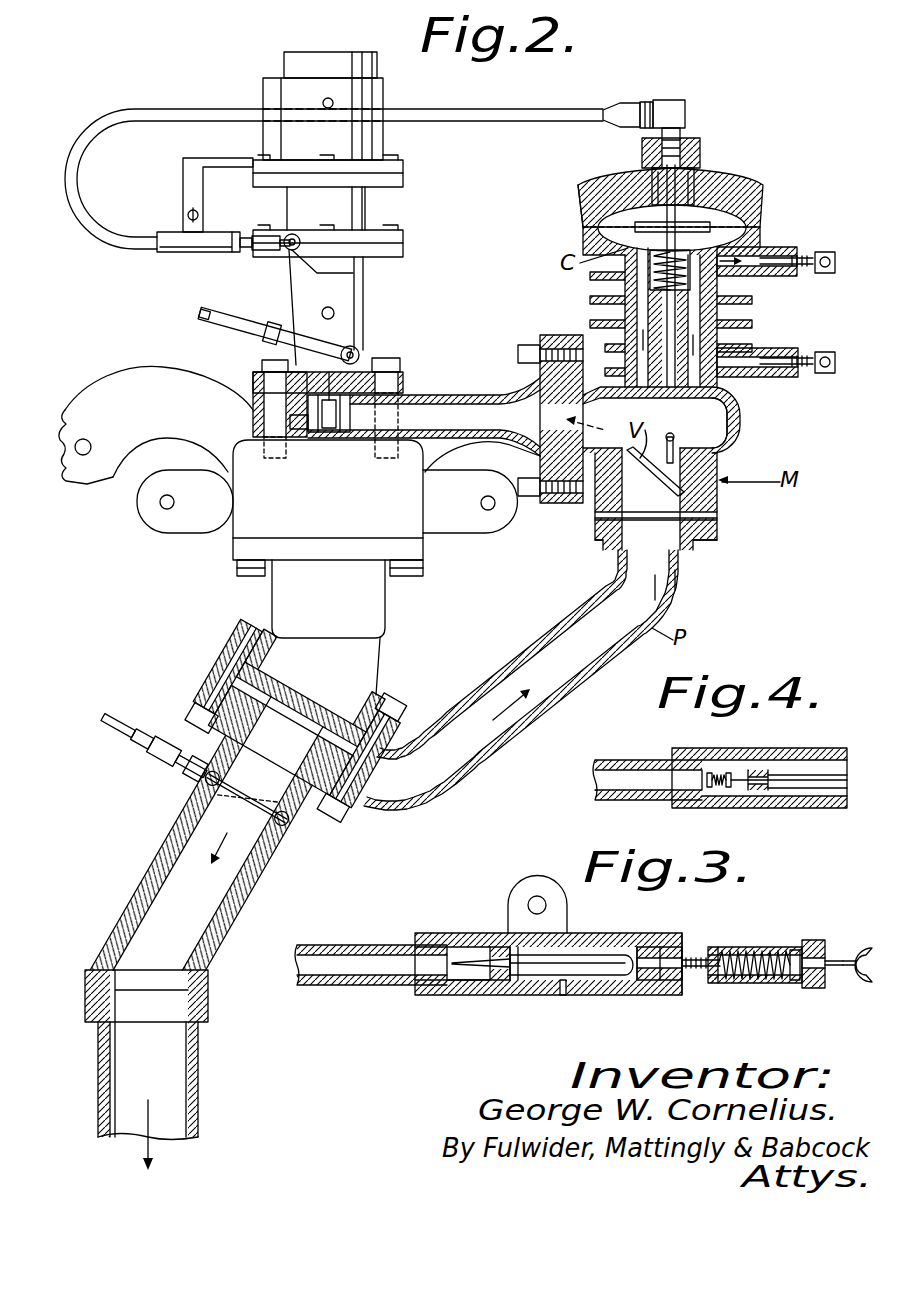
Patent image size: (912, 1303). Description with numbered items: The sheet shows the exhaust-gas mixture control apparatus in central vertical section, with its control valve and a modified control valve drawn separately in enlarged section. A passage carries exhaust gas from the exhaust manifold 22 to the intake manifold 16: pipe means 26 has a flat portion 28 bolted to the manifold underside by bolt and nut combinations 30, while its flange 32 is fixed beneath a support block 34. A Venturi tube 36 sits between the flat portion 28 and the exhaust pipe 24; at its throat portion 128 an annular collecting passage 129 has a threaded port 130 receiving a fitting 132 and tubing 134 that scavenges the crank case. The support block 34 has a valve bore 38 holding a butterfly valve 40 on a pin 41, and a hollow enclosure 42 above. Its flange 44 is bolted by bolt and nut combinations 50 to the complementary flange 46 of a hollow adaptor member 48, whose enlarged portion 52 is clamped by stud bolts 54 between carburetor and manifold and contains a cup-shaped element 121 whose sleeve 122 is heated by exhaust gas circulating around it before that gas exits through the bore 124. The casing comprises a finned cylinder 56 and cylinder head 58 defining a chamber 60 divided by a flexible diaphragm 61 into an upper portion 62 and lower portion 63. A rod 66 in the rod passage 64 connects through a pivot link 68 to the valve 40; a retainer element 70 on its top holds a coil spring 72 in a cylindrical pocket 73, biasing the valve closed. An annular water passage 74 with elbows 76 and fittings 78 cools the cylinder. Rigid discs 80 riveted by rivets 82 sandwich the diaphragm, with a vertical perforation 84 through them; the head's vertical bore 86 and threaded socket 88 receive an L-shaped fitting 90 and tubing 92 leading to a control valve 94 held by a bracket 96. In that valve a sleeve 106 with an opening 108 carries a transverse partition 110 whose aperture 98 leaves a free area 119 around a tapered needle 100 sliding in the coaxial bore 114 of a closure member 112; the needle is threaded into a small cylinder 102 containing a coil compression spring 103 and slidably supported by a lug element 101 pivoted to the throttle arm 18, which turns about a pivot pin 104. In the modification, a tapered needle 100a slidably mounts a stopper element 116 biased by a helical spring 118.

In FIG. 2, the intake manifold 16 is at (228, 527).
In FIG. 2, the throttle arm 18 is at (296, 286).
In FIG. 2, the exhaust manifold 22 is at (268, 598).
In FIG. 2, the exhaust pipe 24 is at (202, 1076).
In FIG. 2, the pipe means 26 is at (530, 630).
In FIG. 2, the flat portion 28 is at (238, 655).
In FIG. 2, the bolt and nut combinations 30 is at (195, 712).
In FIG. 2, the flange 32 is at (720, 541).
In FIG. 2, the support block 34 is at (750, 434).
In FIG. 2, the Venturi tube 36 is at (152, 849).
In FIG. 2, the valve bore 38 is at (718, 513).
In FIG. 2, the butterfly valve 40 is at (722, 470).
In FIG. 2, the pin 41 is at (655, 478).
In FIG. 2, the enclosure 42 is at (733, 421).
In FIG. 2, the flange 44 is at (585, 345).
In FIG. 2, the complementary flange 46 is at (548, 335).
In FIG. 2, the adaptor member 48 is at (450, 393).
In FIG. 2, the bolt and nut combinations 50 is at (518, 354).
In FIG. 2, the enlarged portion 52 is at (252, 408).
In FIG. 2, the stud bolts 54 is at (262, 364).
In FIG. 2, the finned cylinder 56 is at (606, 298).
In FIG. 2, the cylinder head 58 is at (586, 182).
In FIG. 2, the chamber 60 is at (648, 205).
In FIG. 2, the flexible diaphragm 61 is at (605, 218).
In FIG. 2, the upper portion 62 is at (762, 200).
In FIG. 2, the lower portion 63 is at (590, 245).
In FIG. 2, the rod passage 64 is at (702, 292).
In FIG. 2, the rod 66 is at (720, 320).
In FIG. 2, the pivot link 68 is at (676, 447).
In FIG. 2, the retainer element 70 is at (766, 247).
In FIG. 2, the coil spring 72 is at (666, 318).
In FIG. 2, the cylindrical pocket 73 is at (650, 280).
In FIG. 2, the annular water passage 74 is at (735, 348).
In FIG. 2, the elbows 76 is at (812, 257).
In FIG. 2, the fittings 78 is at (830, 274).
In FIG. 2, the rigid discs 80 is at (702, 195).
In FIG. 2, the rivets 82 is at (728, 205).
In FIG. 2, the vertical perforation 84 is at (577, 188).
In FIG. 2, the vertical bore 86 is at (652, 158).
In FIG. 2, the threaded socket 88 is at (700, 148).
In FIG. 2, the L-shaped fitting 90 is at (672, 100).
In FIG. 2, the tubing 92 is at (504, 110).
In FIG. 3, the tubing 92 is at (360, 945).
In FIG. 2, the control valve 94 is at (186, 256).
In FIG. 3, the control valve 94 is at (454, 928).
In FIG. 2, the bracket 96 is at (185, 190).
In FIG. 3, the aperture 98 is at (519, 982).
In FIG. 3, the tapered needle 100 is at (583, 962).
In FIG. 4, the tapered needle 100a is at (815, 776).
In FIG. 3, the lug element 101 is at (845, 978).
In FIG. 2, the small cylinder 102 is at (258, 251).
In FIG. 3, the small cylinder 102 is at (800, 922).
In FIG. 3, the coil compression spring 103 is at (770, 982).
In FIG. 2, the pivot pin 104 is at (335, 312).
In FIG. 3, the sleeve 106 is at (507, 982).
In FIG. 3, the opening 108 is at (564, 992).
In FIG. 3, the transverse partition 110 is at (480, 988).
In FIG. 3, the closure member 112 is at (665, 945).
In FIG. 3, the coaxial bore 114 is at (666, 982).
In FIG. 4, the stopper element 116 is at (729, 771).
In FIG. 4, the helical spring 118 is at (716, 768).
In FIG. 3, the free area 119 is at (490, 945).
In FIG. 2, the cup-shaped element 121 is at (288, 426).
In FIG. 2, the sleeve 122 is at (316, 425).
In FIG. 2, the bore 124 is at (340, 440).
In FIG. 2, the throat portion 128 is at (288, 838).
In FIG. 2, the annular collecting passage 129 is at (382, 692).
In FIG. 2, the threaded port 130 is at (198, 790).
In FIG. 2, the fitting 132 is at (186, 777).
In FIG. 2, the tubing 134 is at (124, 730).